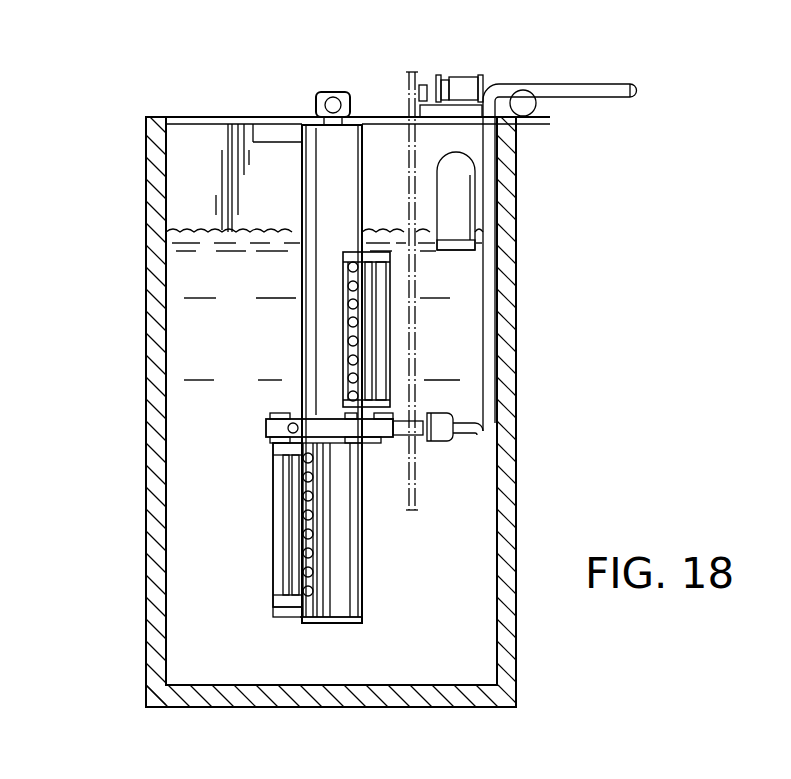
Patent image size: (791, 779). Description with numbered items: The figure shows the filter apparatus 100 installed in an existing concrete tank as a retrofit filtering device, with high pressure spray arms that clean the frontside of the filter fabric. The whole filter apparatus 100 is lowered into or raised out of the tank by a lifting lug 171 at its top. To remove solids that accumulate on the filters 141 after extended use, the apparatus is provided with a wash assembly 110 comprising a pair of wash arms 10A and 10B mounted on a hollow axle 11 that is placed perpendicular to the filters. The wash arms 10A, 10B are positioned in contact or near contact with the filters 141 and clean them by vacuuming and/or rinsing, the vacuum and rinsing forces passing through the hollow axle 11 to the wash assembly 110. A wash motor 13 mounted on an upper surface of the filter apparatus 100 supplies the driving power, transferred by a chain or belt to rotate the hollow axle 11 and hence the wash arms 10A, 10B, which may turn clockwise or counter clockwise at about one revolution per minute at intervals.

The filter apparatus 100 is at (86, 82).
The lifting lug 171 is at (316, 98).
The wash motor 13 is at (467, 78).
The wash arm 10B is at (343, 276).
The hollow axle 11 is at (326, 428).
The wash assembly 110 is at (268, 472).
The filters 141 is at (358, 552).
The wash arm 10A is at (313, 620).